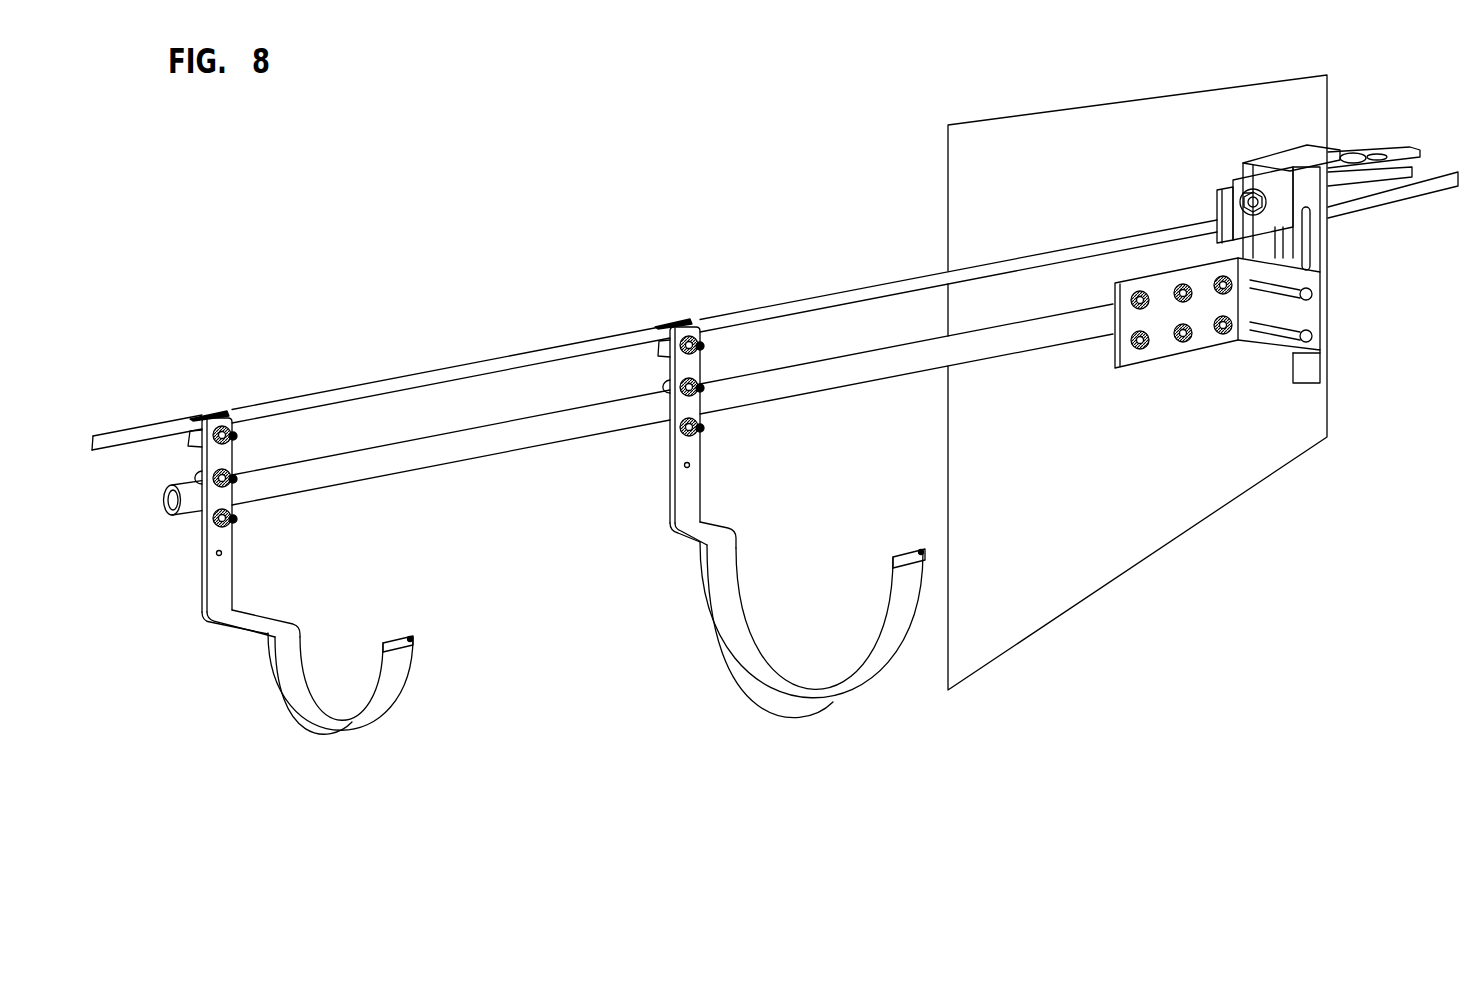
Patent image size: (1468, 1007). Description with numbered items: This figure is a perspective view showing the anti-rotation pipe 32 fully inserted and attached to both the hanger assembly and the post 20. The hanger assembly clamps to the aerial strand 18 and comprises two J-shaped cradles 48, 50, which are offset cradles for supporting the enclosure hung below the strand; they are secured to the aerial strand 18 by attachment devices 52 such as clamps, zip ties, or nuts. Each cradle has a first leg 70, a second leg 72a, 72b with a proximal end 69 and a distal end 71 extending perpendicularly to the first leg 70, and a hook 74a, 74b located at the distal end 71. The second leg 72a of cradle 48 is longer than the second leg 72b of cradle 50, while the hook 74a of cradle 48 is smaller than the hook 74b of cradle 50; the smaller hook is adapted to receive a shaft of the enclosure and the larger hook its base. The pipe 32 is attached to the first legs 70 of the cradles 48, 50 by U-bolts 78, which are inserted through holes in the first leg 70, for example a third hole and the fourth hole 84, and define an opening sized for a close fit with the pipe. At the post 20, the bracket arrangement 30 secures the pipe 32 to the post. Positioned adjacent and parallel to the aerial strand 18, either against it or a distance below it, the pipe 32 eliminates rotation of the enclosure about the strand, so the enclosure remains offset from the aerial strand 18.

The aerial strand 18 is at (430, 380).
The post 20 is at (1067, 541).
The bracket arrangement 30 is at (1345, 261).
The pipe 32 is at (465, 455).
The J-shaped cradle 48 is at (340, 721).
The J-shaped cradle 50 is at (806, 654).
The attachment device 52 is at (202, 410).
The proximal end 69 is at (242, 608).
The first leg 70 is at (232, 575).
The distal end 71 is at (312, 628).
The second leg 72a is at (240, 630).
The second leg 72b is at (683, 540).
The hook 74a is at (317, 692).
The hook 74b is at (775, 653).
The U-bolt 78 is at (193, 477).
The fourth hole 84 is at (217, 555).